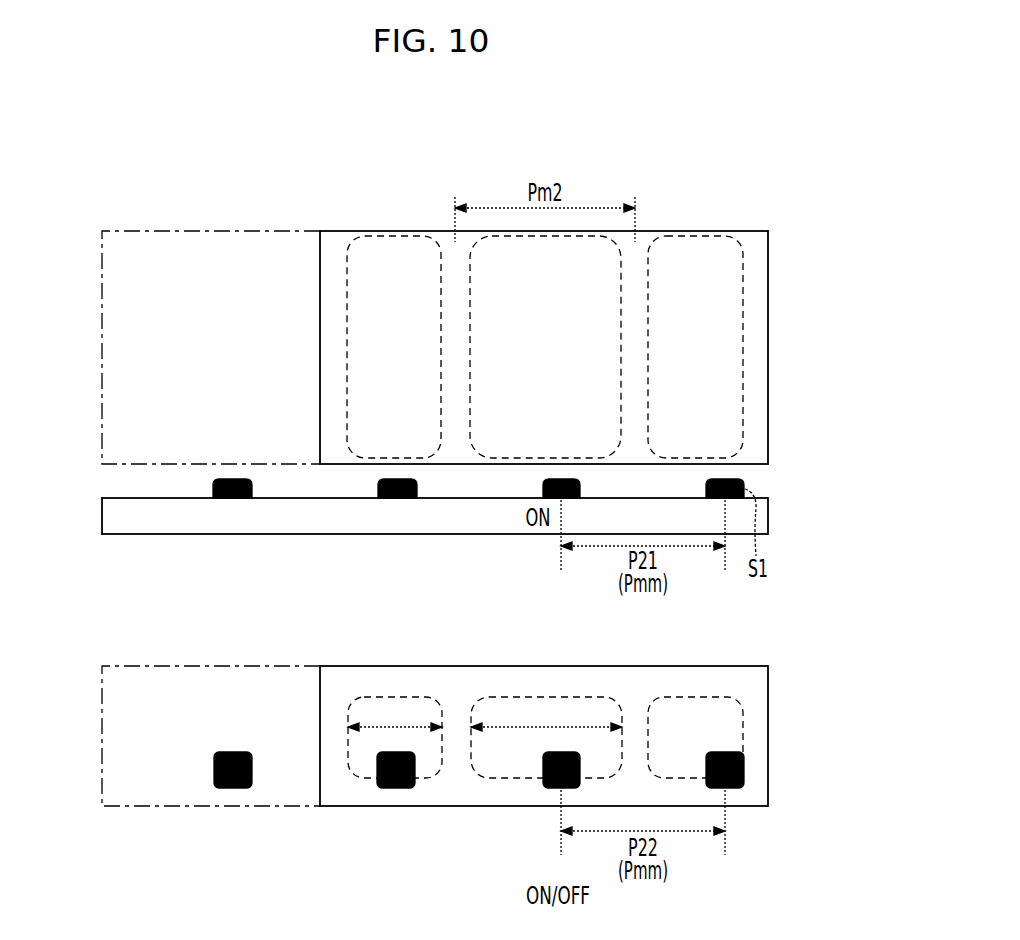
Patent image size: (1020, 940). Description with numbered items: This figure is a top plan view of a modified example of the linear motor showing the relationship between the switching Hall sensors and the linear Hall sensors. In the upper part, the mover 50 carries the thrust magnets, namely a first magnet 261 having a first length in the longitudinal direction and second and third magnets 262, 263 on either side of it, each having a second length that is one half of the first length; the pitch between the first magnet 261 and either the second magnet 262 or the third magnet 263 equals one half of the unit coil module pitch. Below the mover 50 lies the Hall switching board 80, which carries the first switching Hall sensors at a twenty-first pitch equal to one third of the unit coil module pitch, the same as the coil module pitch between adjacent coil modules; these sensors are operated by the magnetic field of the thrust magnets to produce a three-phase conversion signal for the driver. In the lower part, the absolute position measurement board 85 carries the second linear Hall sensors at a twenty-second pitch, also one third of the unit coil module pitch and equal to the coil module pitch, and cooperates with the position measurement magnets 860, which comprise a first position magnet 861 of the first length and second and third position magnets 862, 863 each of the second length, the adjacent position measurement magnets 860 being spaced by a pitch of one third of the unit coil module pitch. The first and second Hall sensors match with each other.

The mover 50 is at (233, 230).
The first magnet 261 is at (478, 263).
The second magnet 262 is at (373, 245).
The third magnet 263 is at (698, 245).
The Hall switching board 80 is at (463, 522).
The absolute position measurement board 85 is at (125, 683).
The position measurement magnets 860 is at (429, 769).
The first position magnet 861 is at (560, 697).
The second position magnet 862 is at (392, 697).
The third position magnet 863 is at (697, 697).